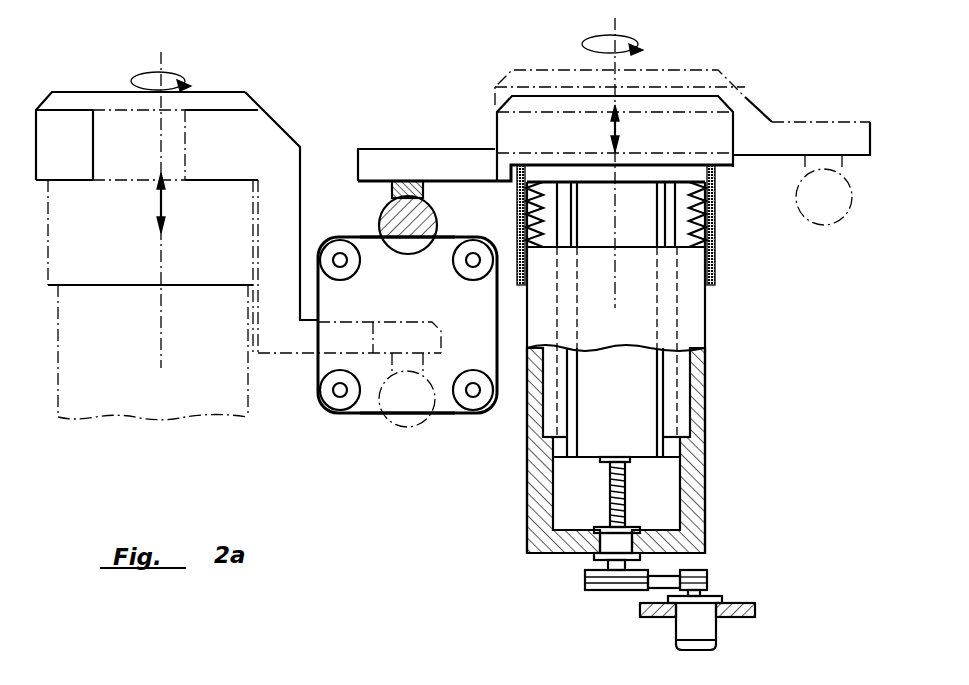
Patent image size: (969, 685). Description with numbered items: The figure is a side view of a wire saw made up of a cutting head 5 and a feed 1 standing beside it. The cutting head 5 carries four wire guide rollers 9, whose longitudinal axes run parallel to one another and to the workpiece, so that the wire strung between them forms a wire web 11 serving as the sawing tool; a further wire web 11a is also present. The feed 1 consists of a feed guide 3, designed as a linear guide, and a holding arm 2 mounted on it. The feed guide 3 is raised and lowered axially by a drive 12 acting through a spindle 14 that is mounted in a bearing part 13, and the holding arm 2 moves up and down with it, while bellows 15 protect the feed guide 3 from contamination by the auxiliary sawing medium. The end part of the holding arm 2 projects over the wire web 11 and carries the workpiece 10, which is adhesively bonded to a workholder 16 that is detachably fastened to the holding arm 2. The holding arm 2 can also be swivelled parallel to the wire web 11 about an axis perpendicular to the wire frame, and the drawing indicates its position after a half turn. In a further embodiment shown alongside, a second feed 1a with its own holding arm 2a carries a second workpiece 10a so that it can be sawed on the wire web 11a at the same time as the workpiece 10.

The feed 1 is at (688, 331).
The second feed 1a is at (113, 405).
The holding arm 2 is at (478, 147).
The holding arm 2a is at (300, 345).
The feed guide 3 is at (682, 417).
The cutting head 5 is at (333, 415).
The wire guide rollers 9 is at (320, 257).
The workpiece 10 is at (385, 218).
The second workpiece 10a is at (413, 433).
The wire web 11 is at (450, 236).
The wire web 11a is at (370, 417).
The drive 12 is at (703, 630).
The bearing part 13 is at (608, 537).
The spindle 14 is at (618, 494).
The bellows 15 is at (716, 220).
The workholder 16 is at (400, 190).